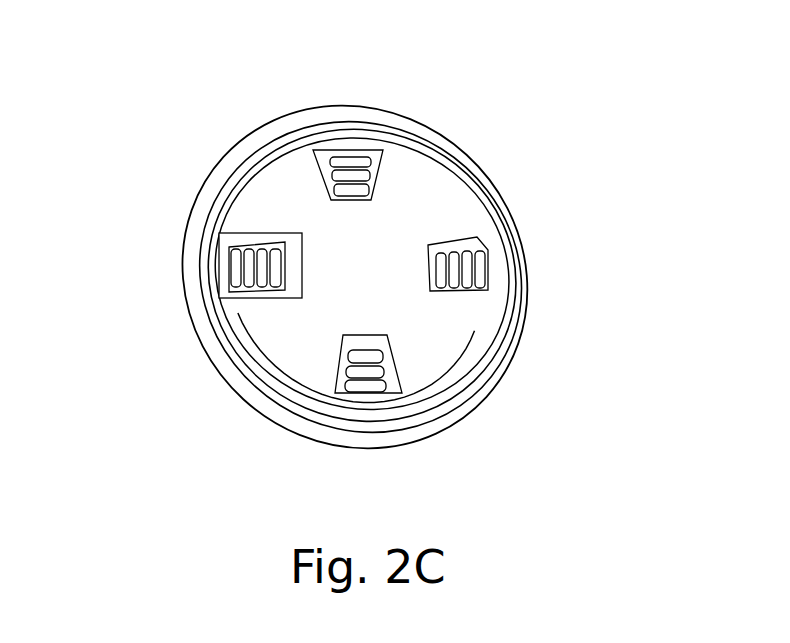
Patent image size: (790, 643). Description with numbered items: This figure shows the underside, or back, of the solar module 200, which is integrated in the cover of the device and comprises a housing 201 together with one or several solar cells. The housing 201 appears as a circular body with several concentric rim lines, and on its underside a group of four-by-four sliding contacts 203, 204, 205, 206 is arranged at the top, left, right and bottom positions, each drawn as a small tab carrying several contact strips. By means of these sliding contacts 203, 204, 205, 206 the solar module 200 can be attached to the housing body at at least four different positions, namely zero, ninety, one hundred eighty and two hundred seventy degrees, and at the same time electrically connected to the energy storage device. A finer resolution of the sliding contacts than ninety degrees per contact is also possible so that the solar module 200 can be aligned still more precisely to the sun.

The solar module 200 is at (217, 133).
The housing 201 is at (423, 195).
The sliding contact 203 is at (218, 263).
The sliding contact 204 is at (342, 167).
The sliding contact 205 is at (486, 253).
The sliding contact 206 is at (385, 388).